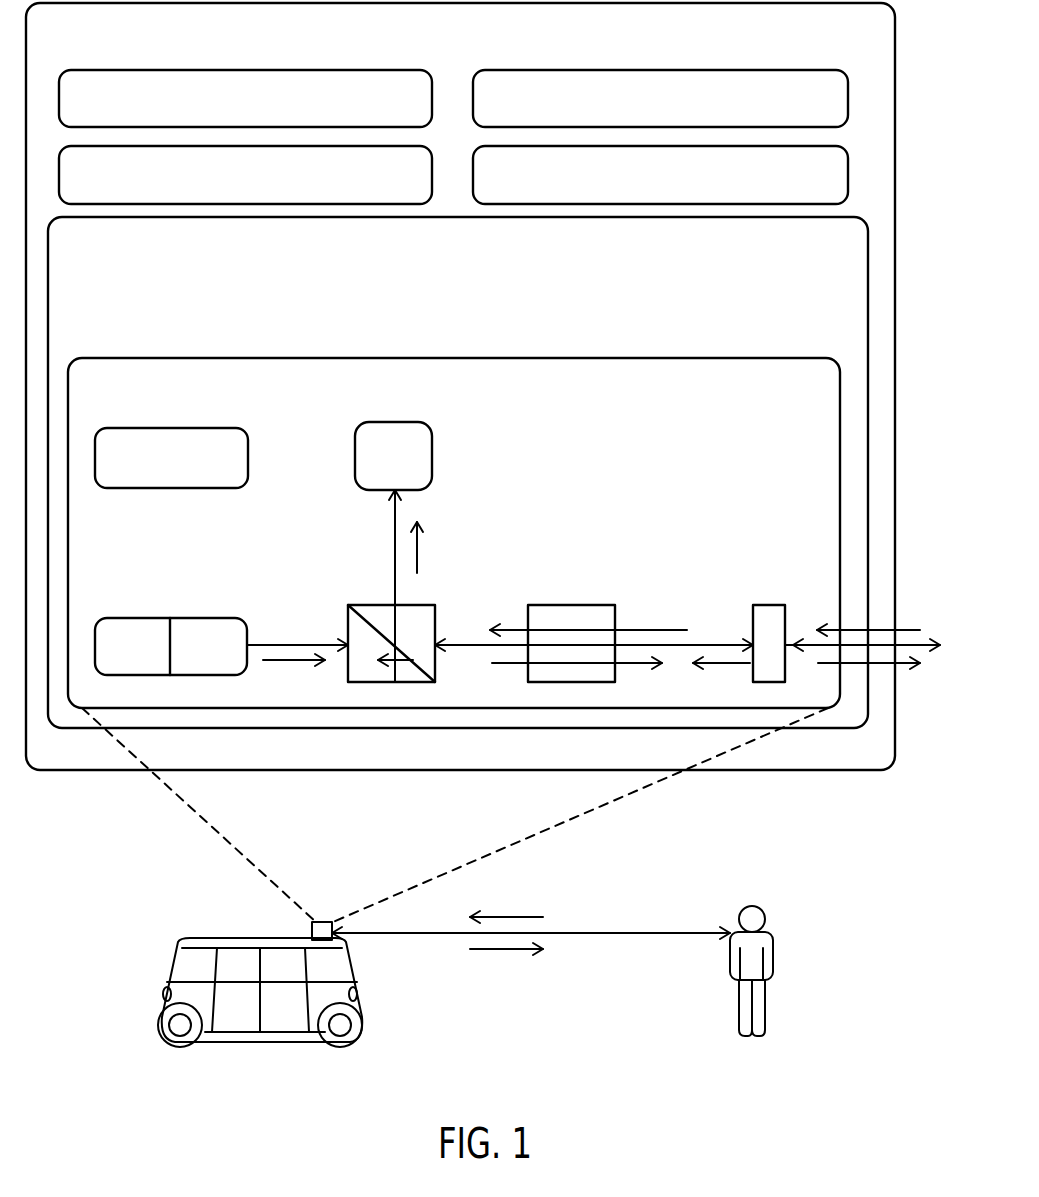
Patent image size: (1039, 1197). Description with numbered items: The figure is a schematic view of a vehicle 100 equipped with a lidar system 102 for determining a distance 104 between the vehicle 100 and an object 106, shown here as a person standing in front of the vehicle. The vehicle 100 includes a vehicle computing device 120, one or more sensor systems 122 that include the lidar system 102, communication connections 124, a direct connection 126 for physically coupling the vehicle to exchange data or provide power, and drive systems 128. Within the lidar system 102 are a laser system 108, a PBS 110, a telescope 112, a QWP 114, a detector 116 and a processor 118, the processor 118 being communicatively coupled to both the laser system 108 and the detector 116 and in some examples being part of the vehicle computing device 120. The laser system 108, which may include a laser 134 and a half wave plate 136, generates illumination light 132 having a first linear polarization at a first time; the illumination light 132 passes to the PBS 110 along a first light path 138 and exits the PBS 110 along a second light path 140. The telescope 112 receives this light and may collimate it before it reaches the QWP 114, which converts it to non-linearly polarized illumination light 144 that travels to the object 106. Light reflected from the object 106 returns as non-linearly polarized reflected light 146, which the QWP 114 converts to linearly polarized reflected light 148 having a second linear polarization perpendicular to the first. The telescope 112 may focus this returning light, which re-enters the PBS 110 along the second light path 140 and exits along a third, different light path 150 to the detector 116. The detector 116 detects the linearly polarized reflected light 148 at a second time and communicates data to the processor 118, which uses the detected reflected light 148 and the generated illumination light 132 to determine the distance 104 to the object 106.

The vehicle 100 is at (175, 40).
The lidar system 102 is at (248, 389).
The distance 104 is at (812, 640).
The object 106 is at (770, 925).
The laser system 108 is at (222, 598).
The PBS 110 is at (348, 605).
The telescope 112 is at (597, 605).
The QWP 114 is at (753, 612).
The detector 116 is at (432, 460).
The processor 118 is at (248, 458).
The vehicle computing device 120 is at (390, 110).
The sensor systems 122 is at (263, 251).
The communication connections 124 is at (820, 110).
The direct connection 126 is at (767, 186).
The drive systems 128 is at (332, 186).
The illumination light 132 is at (278, 665).
The laser 134 is at (150, 655).
The half wave plate 136 is at (224, 655).
The first light path 138 is at (280, 640).
The second light path 140 is at (458, 642).
The non-linearly polarized illumination light 144 is at (900, 665).
The non-linearly polarized reflected light 146 is at (904, 630).
The linearly polarized reflected light 148 is at (424, 550).
The third light path 150 is at (393, 567).